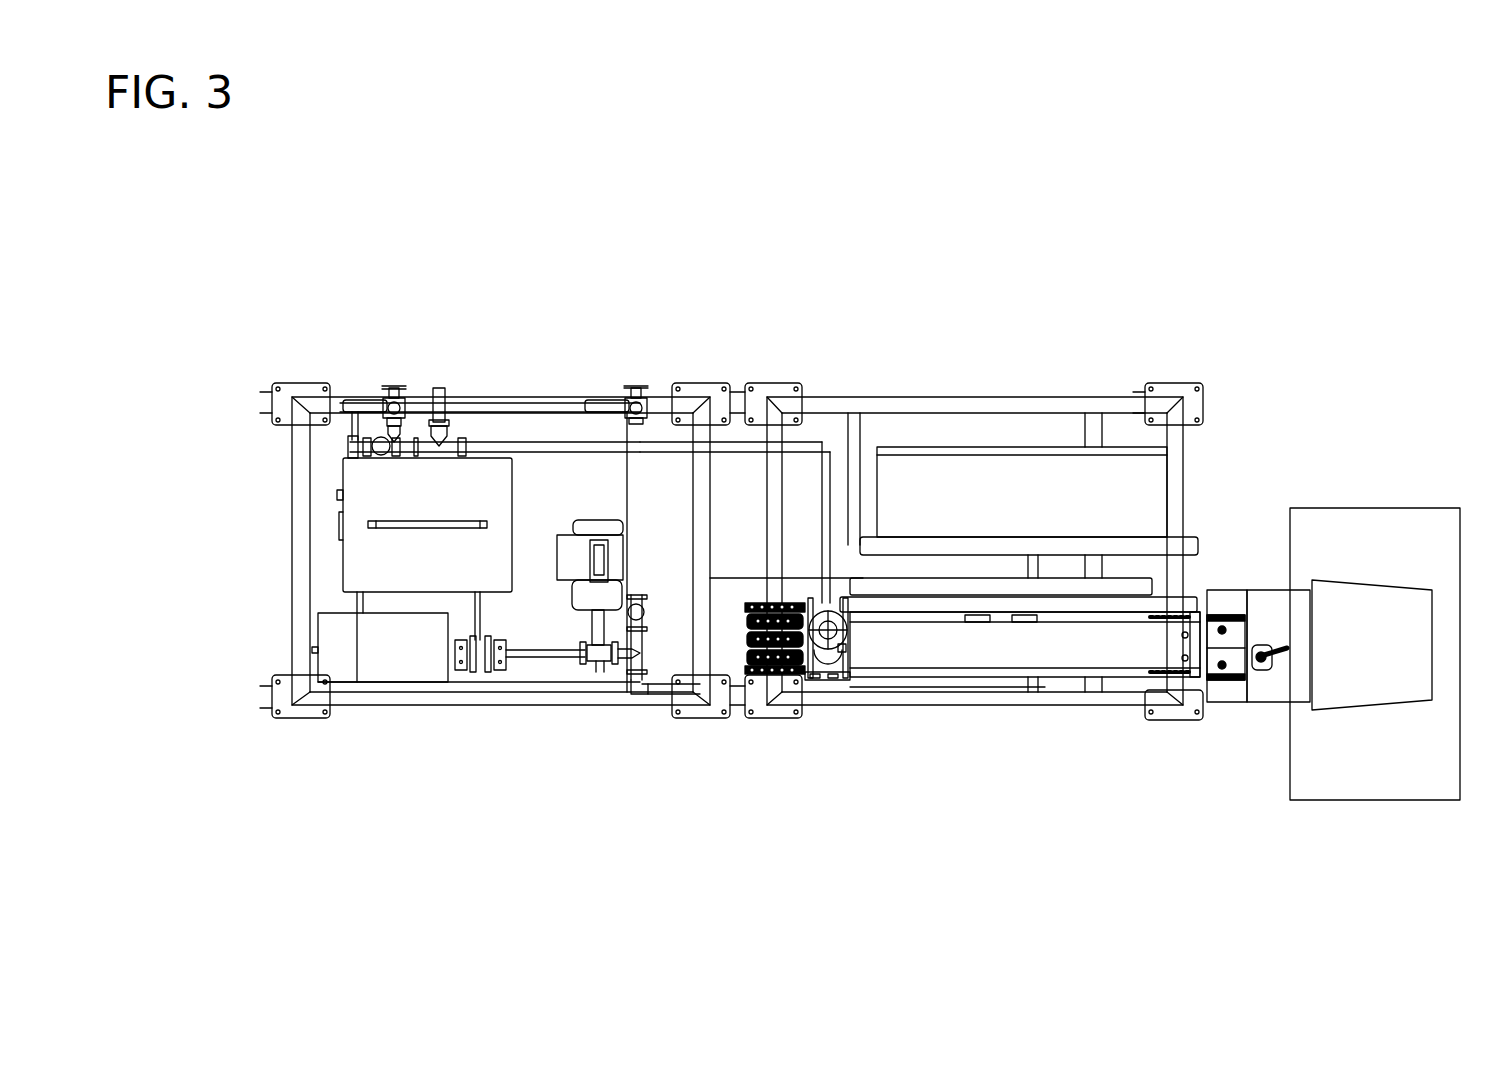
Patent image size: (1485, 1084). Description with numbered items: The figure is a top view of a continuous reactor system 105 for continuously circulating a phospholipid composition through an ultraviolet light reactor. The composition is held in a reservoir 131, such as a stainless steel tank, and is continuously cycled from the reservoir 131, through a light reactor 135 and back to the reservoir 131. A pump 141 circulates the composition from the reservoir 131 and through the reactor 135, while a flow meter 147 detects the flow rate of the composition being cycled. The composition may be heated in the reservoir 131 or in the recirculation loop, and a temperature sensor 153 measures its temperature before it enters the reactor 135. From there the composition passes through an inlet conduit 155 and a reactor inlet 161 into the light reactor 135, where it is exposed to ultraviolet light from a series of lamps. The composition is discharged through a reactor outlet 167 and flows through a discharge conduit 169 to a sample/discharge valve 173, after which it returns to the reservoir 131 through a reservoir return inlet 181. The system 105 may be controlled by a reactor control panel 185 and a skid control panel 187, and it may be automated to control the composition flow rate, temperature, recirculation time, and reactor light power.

The continuous reactor system 105 is at (563, 308).
The reservoir 131 is at (358, 478).
The light reactor 135 is at (1097, 640).
The pump 141 is at (593, 668).
The flow meter 147 is at (488, 668).
The temperature sensor 153 is at (647, 660).
The inlet conduit 155 is at (870, 672).
The reactor inlet 161 is at (1195, 690).
The reactor outlet 167 is at (838, 600).
The discharge conduit 169 is at (735, 448).
The sample/discharge valve 173 is at (393, 388).
The reservoir return inlet 181 is at (352, 440).
The reactor control panel 185 is at (1007, 465).
The skid control panel 187 is at (400, 665).